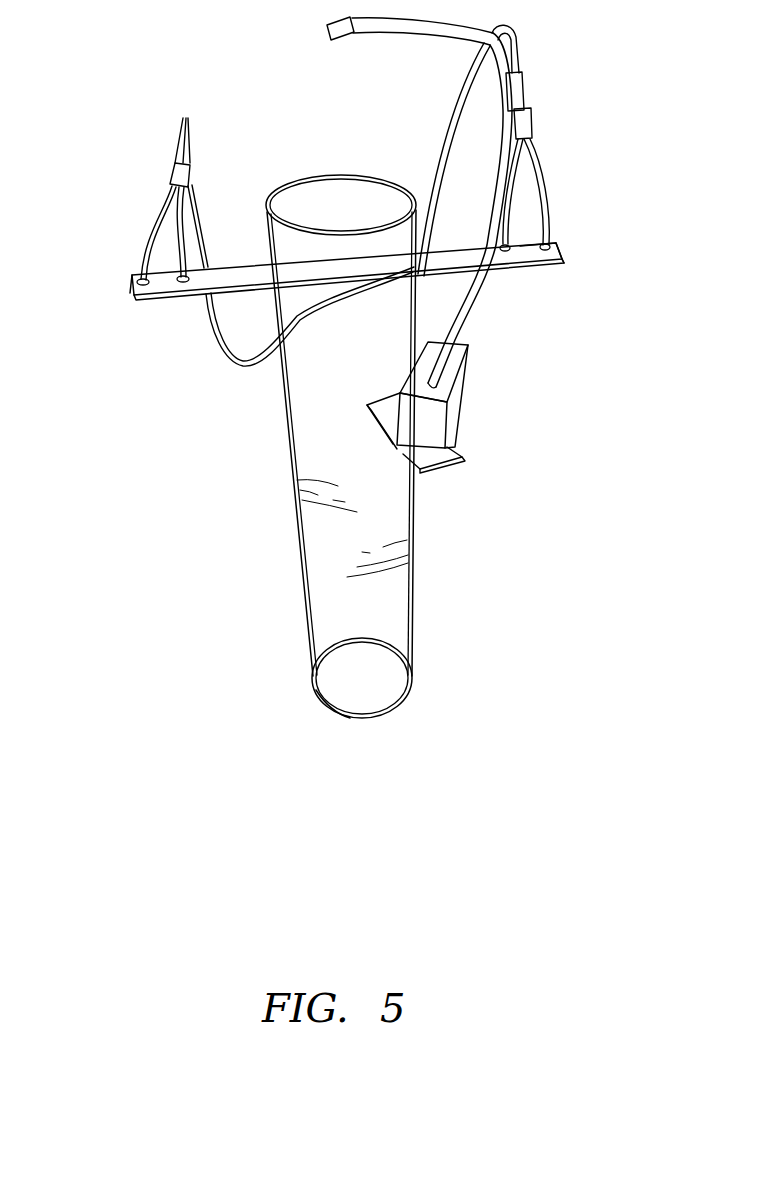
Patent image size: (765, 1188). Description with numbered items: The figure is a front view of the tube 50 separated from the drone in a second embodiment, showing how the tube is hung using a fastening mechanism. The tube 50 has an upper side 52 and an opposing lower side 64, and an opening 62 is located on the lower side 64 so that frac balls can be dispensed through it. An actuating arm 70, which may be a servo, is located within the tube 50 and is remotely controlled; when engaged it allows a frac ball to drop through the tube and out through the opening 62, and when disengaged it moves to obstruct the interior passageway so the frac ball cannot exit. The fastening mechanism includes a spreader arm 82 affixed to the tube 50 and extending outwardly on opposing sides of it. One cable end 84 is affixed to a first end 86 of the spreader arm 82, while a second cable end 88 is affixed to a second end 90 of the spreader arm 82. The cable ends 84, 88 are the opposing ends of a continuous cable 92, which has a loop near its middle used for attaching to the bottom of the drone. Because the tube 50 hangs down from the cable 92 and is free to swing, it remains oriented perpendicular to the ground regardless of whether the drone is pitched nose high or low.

The tube 50 is at (292, 520).
The upper side 52 is at (337, 188).
The opening 62 is at (322, 676).
The lower side 64 is at (327, 730).
The actuating arm 70 is at (453, 430).
The spreader arm 82 is at (237, 305).
The first cable end 84 is at (148, 232).
The first end of spreader arm 86 is at (130, 294).
The second cable end 88 is at (542, 172).
The second end of spreader arm 90 is at (540, 260).
The cable 92 is at (453, 108).